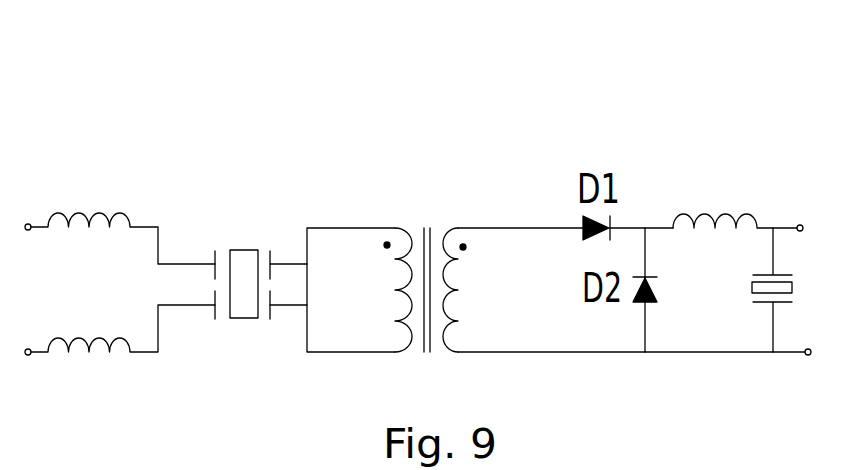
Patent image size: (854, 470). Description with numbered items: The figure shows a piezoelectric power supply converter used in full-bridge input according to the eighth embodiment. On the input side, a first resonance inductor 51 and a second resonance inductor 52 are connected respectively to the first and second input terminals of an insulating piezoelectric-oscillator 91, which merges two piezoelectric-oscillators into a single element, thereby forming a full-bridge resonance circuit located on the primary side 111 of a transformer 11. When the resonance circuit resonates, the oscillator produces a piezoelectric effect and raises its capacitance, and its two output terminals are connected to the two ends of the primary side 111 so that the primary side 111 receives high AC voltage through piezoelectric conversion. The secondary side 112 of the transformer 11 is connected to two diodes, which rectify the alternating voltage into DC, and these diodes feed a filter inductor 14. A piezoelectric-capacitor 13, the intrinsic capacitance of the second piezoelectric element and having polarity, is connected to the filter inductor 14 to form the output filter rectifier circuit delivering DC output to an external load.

The first resonance inductor 51 is at (100, 213).
The second resonance inductor 52 is at (98, 340).
The insulating piezoelectric-oscillator 91 is at (243, 250).
The transformer 11 is at (422, 204).
The primary side 111 is at (395, 230).
The secondary side 112 is at (425, 145).
The filter inductor 14 is at (727, 213).
The piezoelectric-capacitor 13 is at (793, 275).